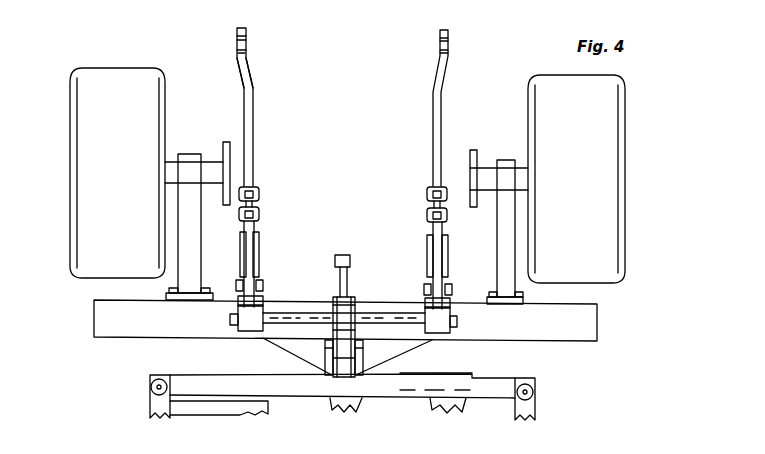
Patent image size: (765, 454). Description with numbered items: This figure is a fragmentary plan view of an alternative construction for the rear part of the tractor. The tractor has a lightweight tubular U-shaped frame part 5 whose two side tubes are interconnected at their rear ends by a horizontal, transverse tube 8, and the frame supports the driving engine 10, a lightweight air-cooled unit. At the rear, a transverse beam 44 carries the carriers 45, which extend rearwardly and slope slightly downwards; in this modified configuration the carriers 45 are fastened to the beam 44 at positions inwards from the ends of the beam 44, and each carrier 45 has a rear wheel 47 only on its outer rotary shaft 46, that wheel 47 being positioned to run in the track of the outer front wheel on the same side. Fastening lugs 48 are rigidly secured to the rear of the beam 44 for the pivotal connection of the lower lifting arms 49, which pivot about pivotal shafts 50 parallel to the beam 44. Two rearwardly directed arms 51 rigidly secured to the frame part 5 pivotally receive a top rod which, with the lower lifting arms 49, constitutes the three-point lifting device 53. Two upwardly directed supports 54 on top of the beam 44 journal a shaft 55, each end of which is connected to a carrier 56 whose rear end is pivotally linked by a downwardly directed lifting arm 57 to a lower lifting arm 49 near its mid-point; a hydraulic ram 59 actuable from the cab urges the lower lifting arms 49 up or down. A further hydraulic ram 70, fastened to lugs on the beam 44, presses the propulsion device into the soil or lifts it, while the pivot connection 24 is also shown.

The U-shaped frame part 5 is at (150, 398).
The tube 8 is at (195, 377).
The driving engine 10 is at (330, 403).
The pivot connection 24 is at (536, 393).
The beam 44 is at (118, 328).
The carriers 45 is at (190, 222).
The rotary shaft 46 is at (213, 167).
The rear wheel 47 is at (85, 115).
The fastening lugs 48 is at (240, 282).
The lower lifting arms 49 is at (237, 34).
The pivotal shafts 50 is at (458, 302).
The rearwardly directed arms 51 is at (327, 360).
The three-point lifting device 53 is at (268, 107).
The upwardly directed supports 54 is at (268, 304).
The shaft 55 is at (231, 319).
The carrier 56 is at (254, 270).
The lifting arm 57 is at (255, 205).
The hydraulic ram 59 is at (253, 253).
The hydraulic ram 70 is at (350, 296).